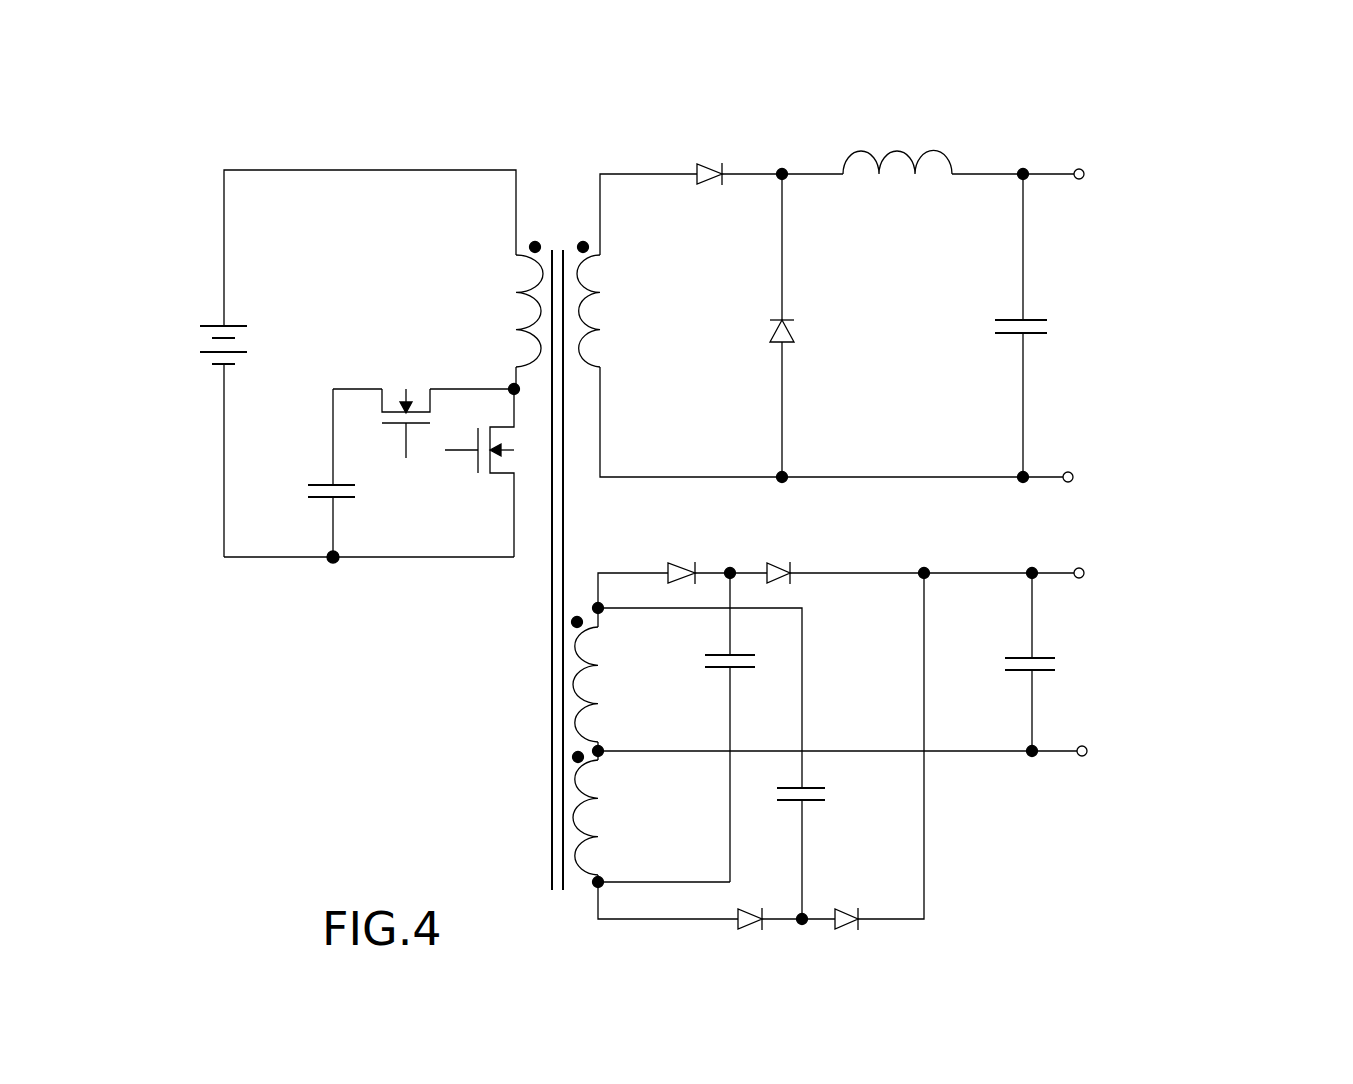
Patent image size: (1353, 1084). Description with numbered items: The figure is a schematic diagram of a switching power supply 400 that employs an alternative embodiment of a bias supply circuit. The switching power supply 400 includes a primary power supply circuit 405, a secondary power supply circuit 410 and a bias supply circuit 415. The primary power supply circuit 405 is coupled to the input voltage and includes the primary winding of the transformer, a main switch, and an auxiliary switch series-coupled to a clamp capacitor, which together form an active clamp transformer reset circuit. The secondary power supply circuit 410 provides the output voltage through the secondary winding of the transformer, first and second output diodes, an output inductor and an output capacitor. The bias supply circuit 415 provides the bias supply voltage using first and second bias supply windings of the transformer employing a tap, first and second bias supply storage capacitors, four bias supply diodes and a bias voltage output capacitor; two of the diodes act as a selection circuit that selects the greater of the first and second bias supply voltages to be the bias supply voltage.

The switching power supply 400 is at (1236, 167).
The primary power supply circuit 405 is at (416, 154).
The secondary power supply circuit 410 is at (988, 142).
The bias supply circuit 415 is at (1065, 542).